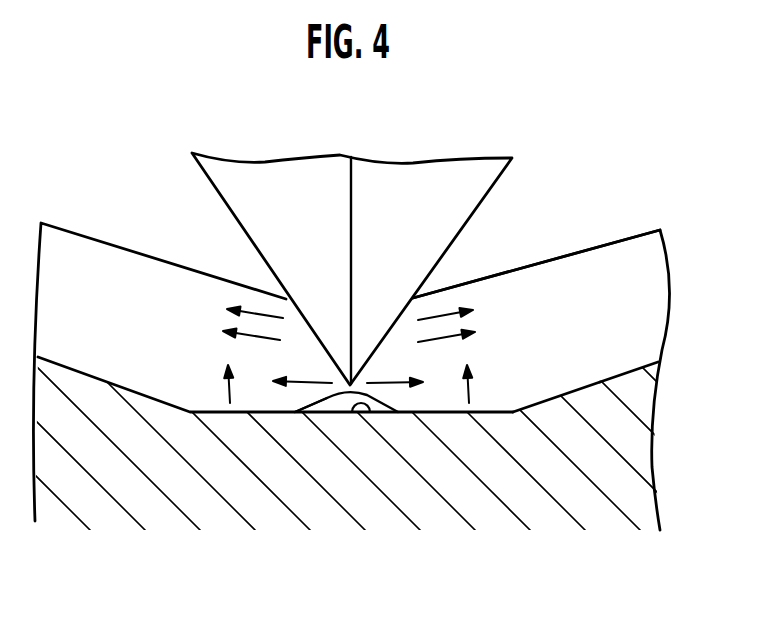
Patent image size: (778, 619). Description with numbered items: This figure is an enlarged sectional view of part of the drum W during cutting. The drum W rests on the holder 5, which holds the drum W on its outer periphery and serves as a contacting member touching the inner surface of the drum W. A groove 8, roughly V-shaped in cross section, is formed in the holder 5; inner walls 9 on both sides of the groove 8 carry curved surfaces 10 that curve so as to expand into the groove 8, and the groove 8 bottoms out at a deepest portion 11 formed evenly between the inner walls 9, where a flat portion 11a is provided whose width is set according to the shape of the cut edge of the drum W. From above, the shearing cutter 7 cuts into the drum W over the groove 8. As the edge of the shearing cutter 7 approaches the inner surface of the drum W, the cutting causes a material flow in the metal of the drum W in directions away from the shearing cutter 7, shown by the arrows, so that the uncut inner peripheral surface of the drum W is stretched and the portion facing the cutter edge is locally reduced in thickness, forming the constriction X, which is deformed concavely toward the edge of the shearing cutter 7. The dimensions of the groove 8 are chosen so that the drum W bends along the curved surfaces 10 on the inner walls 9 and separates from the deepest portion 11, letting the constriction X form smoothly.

The holder 5 is at (612, 467).
The shearing cutter 7 is at (483, 200).
The groove 8 is at (600, 271).
The inner wall 9 is at (568, 393).
The curved surface 10 is at (625, 362).
The deepest portion 11 is at (377, 412).
The flat portion 11a is at (414, 494).
The drum W is at (143, 254).
The constriction X is at (325, 400).